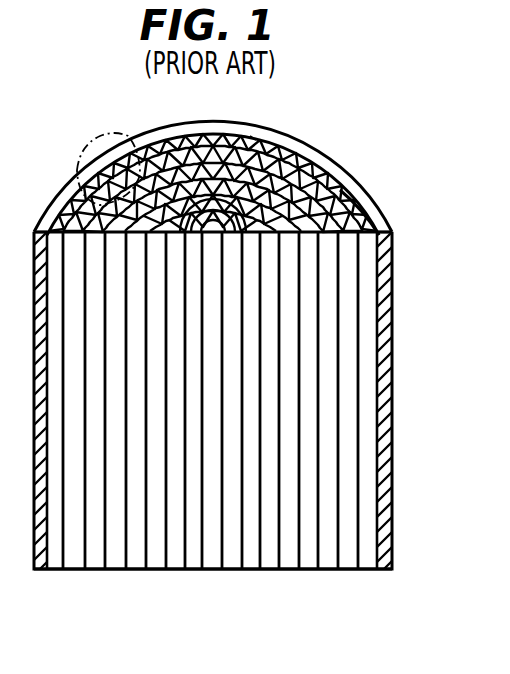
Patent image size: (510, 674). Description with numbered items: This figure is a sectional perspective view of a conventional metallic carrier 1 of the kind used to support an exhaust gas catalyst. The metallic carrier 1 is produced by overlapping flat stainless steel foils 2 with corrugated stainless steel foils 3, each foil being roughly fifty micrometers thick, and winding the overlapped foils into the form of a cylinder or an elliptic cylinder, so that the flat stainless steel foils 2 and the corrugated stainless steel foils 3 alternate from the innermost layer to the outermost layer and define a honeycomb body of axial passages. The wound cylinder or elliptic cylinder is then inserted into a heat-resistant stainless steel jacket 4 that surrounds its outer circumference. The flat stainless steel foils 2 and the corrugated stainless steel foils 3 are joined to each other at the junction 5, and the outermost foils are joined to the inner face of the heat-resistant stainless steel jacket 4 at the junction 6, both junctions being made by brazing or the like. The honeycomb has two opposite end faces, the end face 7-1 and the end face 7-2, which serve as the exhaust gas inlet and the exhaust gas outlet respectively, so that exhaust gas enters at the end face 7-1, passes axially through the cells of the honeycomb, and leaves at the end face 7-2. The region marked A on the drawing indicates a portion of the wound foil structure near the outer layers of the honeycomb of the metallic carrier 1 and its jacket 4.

The metallic carrier 1 is at (358, 167).
The flat stainless steel foils 2 is at (380, 223).
The corrugated stainless steel foils 3 is at (305, 157).
The heat-resistant stainless steel jacket 4 is at (392, 425).
The junction between flat and corrugated foils 5 is at (252, 136).
The junction between foils and jacket 6 is at (365, 197).
The end face of the honeycomb (exhaust gas inlet) 7-1 is at (323, 237).
The end face of the honeycomb (exhaust gas outlet) 7-2 is at (283, 570).
The region A is at (104, 157).